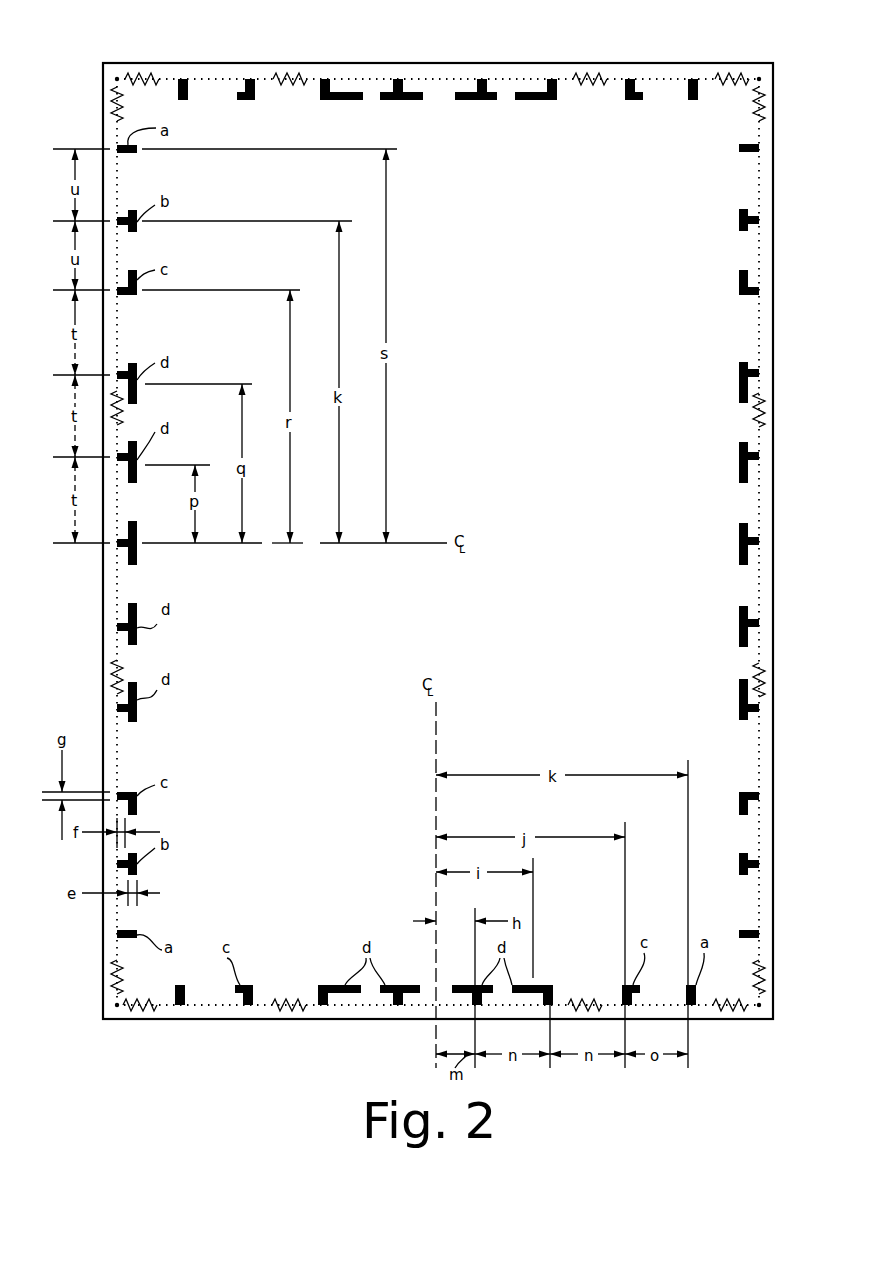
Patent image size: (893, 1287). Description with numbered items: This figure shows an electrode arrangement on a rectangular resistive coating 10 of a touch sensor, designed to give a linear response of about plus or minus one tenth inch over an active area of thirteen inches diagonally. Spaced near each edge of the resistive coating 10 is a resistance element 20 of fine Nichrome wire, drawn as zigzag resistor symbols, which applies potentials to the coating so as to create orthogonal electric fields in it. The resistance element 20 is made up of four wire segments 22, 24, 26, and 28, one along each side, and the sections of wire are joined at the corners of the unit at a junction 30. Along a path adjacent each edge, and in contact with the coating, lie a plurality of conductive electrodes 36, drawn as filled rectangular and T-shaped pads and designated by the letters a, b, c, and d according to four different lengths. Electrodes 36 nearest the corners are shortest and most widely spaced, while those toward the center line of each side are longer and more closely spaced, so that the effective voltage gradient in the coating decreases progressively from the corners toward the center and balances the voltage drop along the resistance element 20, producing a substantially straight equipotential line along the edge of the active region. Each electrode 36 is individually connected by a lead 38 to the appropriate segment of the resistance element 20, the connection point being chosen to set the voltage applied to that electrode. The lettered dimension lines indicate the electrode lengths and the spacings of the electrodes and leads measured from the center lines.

The resistive coating 10 is at (568, 344).
The resistance element 20 is at (590, 74).
The resistance element segment 22 is at (113, 105).
The resistance element segment 24 is at (140, 1010).
The resistance element segment 26 is at (766, 106).
The resistance element segment 28 is at (145, 76).
The junction 30 is at (762, 76).
The electrode 36 is at (126, 638).
The lead 38 is at (122, 618).